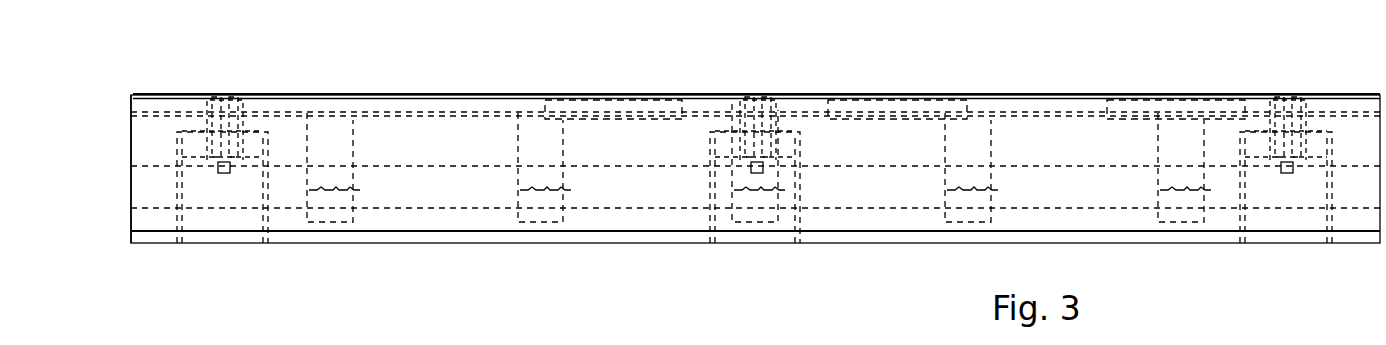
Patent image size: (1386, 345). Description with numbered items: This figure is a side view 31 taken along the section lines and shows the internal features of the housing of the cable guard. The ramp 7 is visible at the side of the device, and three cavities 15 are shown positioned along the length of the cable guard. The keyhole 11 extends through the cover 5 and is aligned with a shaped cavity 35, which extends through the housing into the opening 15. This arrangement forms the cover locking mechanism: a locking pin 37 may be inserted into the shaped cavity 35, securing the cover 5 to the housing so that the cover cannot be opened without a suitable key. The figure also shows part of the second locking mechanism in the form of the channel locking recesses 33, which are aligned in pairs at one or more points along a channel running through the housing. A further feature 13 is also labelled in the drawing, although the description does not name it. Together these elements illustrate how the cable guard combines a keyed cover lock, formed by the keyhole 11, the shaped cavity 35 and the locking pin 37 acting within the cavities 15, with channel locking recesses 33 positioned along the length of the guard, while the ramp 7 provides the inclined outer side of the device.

The cover 5 is at (481, 105).
The ramp 7 is at (131, 186).
The keyhole 11 is at (225, 100).
The reinforcing strip 13 is at (568, 105).
The cavity 15 is at (232, 195).
The side view 31 is at (183, 272).
The channel locking recess 33 is at (328, 130).
The shaped cavity 35 is at (208, 110).
The locking pin 37 is at (240, 105).